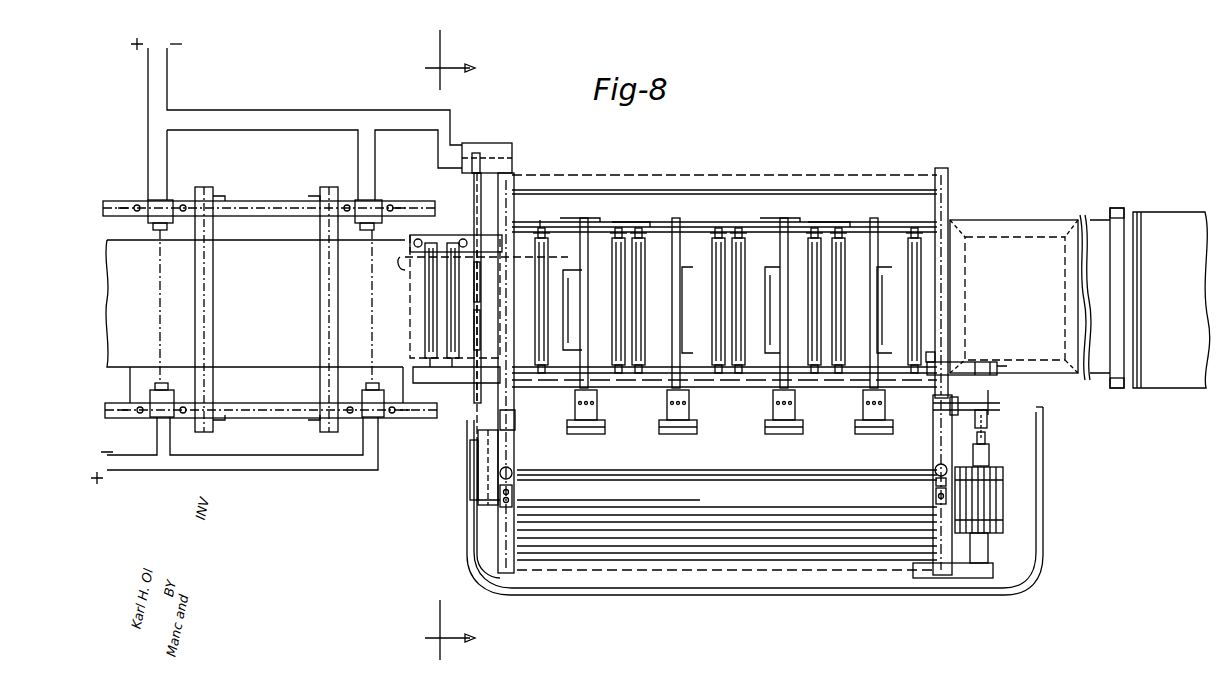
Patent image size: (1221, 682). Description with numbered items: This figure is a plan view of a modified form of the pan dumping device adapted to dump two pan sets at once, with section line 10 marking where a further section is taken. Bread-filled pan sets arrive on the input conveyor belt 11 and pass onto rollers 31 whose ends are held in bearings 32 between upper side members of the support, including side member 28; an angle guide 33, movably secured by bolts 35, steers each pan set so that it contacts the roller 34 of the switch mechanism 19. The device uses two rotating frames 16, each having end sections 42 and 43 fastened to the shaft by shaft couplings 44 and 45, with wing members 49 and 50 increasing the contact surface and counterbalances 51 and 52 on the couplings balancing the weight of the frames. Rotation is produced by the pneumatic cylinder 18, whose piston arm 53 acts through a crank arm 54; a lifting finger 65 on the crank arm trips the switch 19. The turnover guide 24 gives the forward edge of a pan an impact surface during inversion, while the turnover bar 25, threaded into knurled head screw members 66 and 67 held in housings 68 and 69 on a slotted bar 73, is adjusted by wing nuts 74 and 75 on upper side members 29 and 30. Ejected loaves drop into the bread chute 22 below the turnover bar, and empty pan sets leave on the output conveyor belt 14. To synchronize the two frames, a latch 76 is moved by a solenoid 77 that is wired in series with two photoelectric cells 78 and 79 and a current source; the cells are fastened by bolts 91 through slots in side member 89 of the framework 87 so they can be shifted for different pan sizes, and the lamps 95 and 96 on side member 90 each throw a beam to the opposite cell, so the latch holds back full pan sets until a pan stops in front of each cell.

The section line 10 is at (450, 348).
The input conveyor belt 11 is at (232, 258).
The output conveyor belt 14 is at (1180, 394).
The frame 16 is at (798, 207).
The pneumatic cylinder 18 is at (1004, 487).
The switch mechanism 19 is at (963, 358).
The chute 22 is at (740, 595).
The turnover guide 24 is at (730, 390).
The turnover bar 25 is at (786, 473).
The upper side member 28 is at (918, 222).
The upper side member 29 is at (516, 437).
The upper side member 30 is at (700, 390).
The roller 31 is at (975, 258).
The bearing 32 is at (541, 220).
The angle guide 33 is at (400, 270).
The roller 34 is at (935, 350).
The bolt 35 is at (462, 243).
The end section 42 is at (886, 243).
The end section 43 is at (796, 247).
The shaft coupling 44 is at (850, 390).
The shaft coupling 45 is at (790, 390).
The wing member 49 is at (890, 258).
The wing member 50 is at (766, 300).
The counterbalance 51 is at (868, 434).
The counterbalance 52 is at (782, 447).
The piston arm 53 is at (988, 440).
The crank arm 54 is at (990, 422).
The lifting finger 65 is at (992, 400).
The knurled head screw member 66 is at (934, 482).
The knurled head screw member 67 is at (514, 490).
The housing 68 is at (935, 466).
The housing 69 is at (512, 468).
The slotted bar 73 is at (512, 505).
The wing nut 74 is at (934, 496).
The wing nut 75 is at (475, 538).
The latch 76 is at (474, 282).
The solenoid 77 is at (480, 145).
The photoelectric cell 78 is at (152, 205).
The photoelectric cell 79 is at (378, 200).
The framework 87 is at (300, 190).
The side member 89 is at (226, 205).
The side member 90 is at (258, 413).
The bolt 91 is at (392, 415).
The light source 95 is at (175, 393).
The light source 96 is at (362, 393).